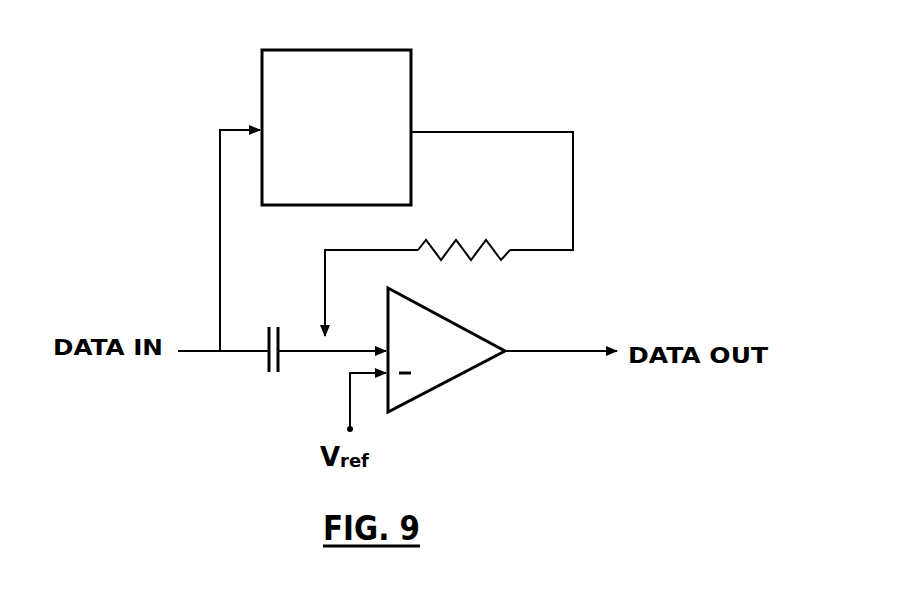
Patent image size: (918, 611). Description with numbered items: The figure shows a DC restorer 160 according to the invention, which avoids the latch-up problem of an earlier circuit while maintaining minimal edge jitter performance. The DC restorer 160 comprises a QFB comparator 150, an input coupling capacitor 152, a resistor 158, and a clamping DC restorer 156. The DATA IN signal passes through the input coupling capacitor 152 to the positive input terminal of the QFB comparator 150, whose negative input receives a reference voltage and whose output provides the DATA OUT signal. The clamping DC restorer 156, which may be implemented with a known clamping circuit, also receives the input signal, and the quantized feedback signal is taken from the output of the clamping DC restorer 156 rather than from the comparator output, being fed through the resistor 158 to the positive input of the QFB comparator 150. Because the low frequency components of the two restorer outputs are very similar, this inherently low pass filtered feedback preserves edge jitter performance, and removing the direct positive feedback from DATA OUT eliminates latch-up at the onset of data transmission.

The QFB comparator 150 is at (454, 322).
The input coupling capacitor 152 is at (266, 337).
The clamping DC restorer 156 is at (411, 72).
The resistor 158 is at (482, 248).
The DC restorer 160 is at (200, 110).